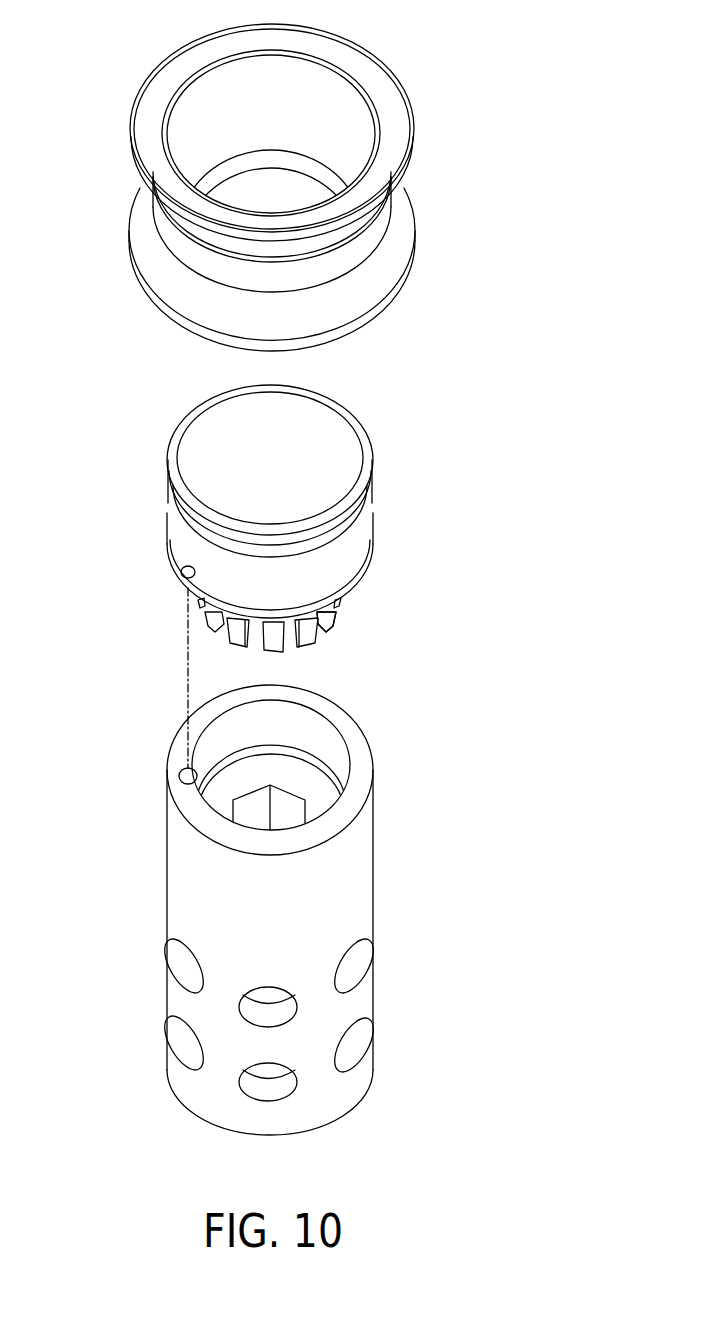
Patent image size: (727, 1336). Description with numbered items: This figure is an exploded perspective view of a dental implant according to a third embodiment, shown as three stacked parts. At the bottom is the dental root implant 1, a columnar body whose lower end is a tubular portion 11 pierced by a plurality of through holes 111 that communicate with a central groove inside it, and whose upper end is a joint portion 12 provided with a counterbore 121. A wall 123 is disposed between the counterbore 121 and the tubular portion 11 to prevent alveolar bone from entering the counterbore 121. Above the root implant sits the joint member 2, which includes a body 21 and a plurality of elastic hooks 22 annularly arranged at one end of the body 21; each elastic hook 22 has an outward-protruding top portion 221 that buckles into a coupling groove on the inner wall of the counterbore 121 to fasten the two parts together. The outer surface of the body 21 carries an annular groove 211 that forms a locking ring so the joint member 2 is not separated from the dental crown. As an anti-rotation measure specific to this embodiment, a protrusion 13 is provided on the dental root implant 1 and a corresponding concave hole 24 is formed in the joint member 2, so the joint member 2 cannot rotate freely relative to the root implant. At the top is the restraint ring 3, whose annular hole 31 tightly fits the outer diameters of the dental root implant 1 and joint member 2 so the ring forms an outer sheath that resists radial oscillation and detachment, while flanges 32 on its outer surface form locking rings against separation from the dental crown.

The dental root implant 1 is at (329, 917).
The tubular portion 11 is at (310, 966).
The through holes 111 is at (353, 1052).
The joint portion 12 is at (278, 763).
The counterbore 121 is at (307, 732).
The wall 123 is at (310, 782).
The protrusion 13 is at (180, 772).
The joint member 2 is at (289, 576).
The body 21 is at (207, 432).
The annular groove 211 is at (352, 543).
The elastic hooks 22 is at (305, 630).
The top portion 221 is at (336, 618).
The concave hole 24 is at (183, 577).
The restraint ring 3 is at (273, 186).
The annular hole 31 is at (205, 98).
The flange 32 is at (140, 172).